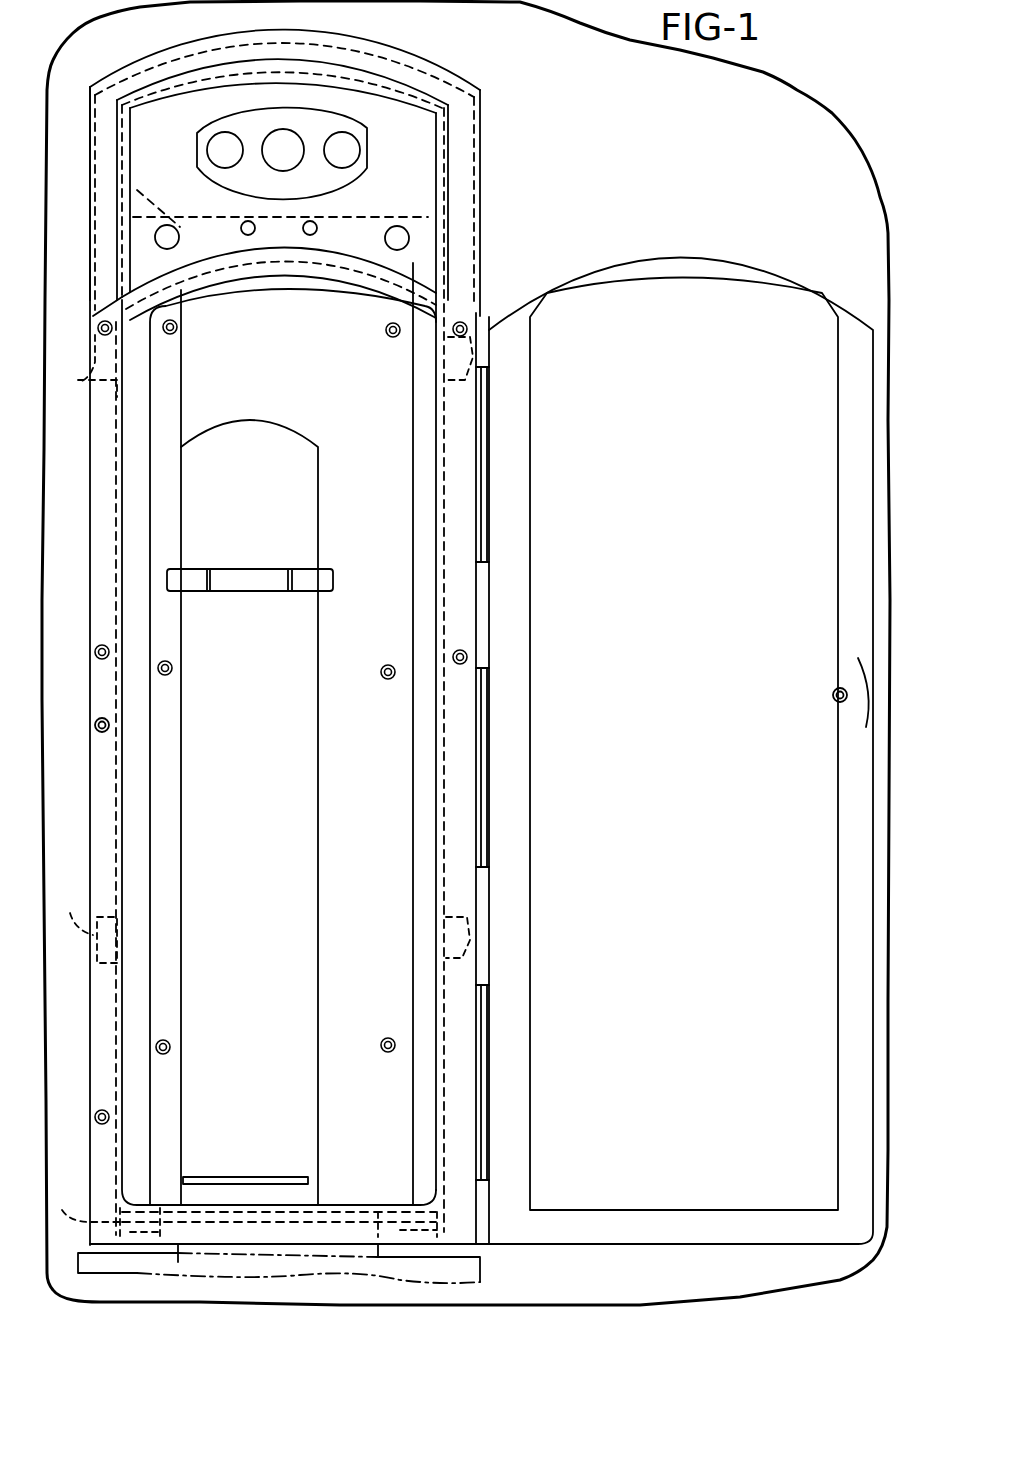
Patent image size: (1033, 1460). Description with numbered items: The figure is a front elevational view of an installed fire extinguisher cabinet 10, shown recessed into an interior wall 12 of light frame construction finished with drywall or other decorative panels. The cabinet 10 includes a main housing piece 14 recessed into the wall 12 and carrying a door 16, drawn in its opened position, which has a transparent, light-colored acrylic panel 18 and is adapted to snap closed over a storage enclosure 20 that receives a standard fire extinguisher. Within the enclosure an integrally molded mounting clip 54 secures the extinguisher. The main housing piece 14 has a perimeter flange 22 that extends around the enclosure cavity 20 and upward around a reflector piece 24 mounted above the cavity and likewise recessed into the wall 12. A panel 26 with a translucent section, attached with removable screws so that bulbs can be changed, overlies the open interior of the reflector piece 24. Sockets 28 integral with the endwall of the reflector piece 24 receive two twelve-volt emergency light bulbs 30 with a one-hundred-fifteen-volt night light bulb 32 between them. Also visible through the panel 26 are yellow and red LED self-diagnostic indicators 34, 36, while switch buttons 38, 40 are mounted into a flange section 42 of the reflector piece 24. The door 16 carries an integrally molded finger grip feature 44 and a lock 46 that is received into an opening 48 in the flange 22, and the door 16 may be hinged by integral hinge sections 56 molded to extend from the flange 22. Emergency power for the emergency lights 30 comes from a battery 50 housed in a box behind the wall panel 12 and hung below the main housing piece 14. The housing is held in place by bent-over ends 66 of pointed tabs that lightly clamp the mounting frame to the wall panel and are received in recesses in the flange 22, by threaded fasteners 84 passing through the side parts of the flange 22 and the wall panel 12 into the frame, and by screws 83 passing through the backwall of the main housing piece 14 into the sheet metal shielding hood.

The fire extinguisher cabinet 10 is at (667, 158).
The interior wall 12 is at (641, 92).
The main housing piece 14 is at (473, 430).
The door 16 is at (780, 277).
The acrylic panel 18 is at (752, 402).
The storage enclosure 20 is at (366, 439).
The perimeter flange 22 is at (93, 465).
The reflector piece 24 is at (412, 127).
The panel 26 is at (423, 153).
The sockets 28 is at (307, 103).
The emergency light bulbs 30 is at (213, 133).
The night light bulb 32 is at (357, 182).
The yellow LED self-diagnostic indicator 34 is at (243, 224).
The red LED self-diagnostic indicator 36 is at (318, 226).
The switch button 38 is at (176, 249).
The switch button 40 is at (409, 238).
The flange section 42 is at (137, 190).
The finger grip feature 44 is at (863, 677).
The lock 46 is at (831, 694).
The opening 48 is at (95, 724).
The battery 50 is at (420, 1290).
The mounting clip 54 is at (303, 568).
The hinge sections 56 is at (488, 633).
The ends of pointed tabs 66 is at (77, 381).
The screws 83 is at (178, 330).
The threaded fasteners 84 is at (93, 323).